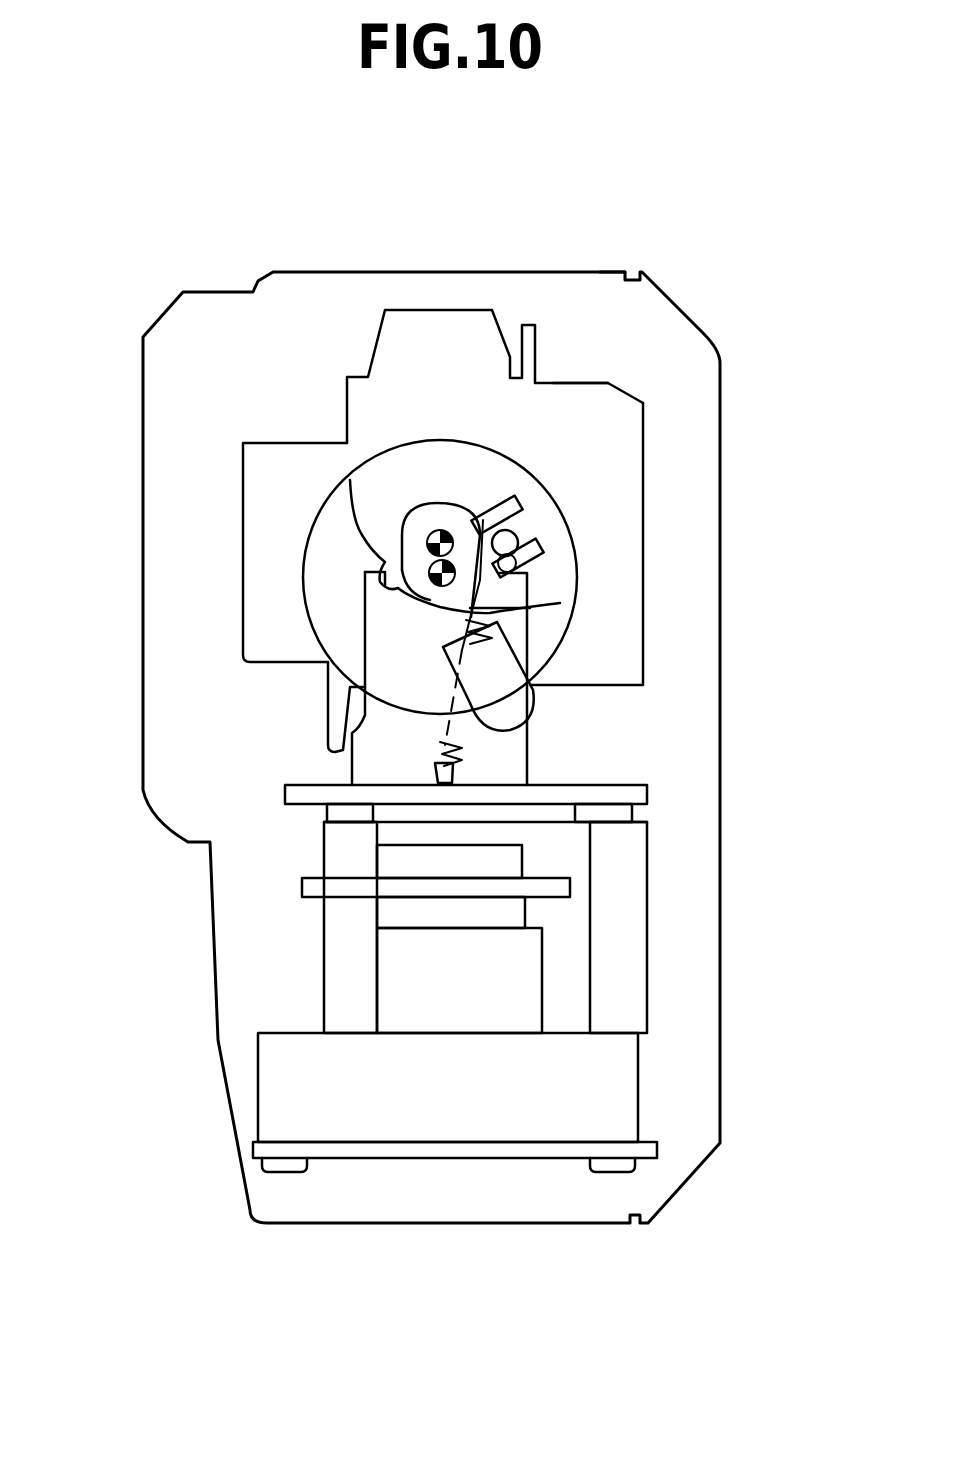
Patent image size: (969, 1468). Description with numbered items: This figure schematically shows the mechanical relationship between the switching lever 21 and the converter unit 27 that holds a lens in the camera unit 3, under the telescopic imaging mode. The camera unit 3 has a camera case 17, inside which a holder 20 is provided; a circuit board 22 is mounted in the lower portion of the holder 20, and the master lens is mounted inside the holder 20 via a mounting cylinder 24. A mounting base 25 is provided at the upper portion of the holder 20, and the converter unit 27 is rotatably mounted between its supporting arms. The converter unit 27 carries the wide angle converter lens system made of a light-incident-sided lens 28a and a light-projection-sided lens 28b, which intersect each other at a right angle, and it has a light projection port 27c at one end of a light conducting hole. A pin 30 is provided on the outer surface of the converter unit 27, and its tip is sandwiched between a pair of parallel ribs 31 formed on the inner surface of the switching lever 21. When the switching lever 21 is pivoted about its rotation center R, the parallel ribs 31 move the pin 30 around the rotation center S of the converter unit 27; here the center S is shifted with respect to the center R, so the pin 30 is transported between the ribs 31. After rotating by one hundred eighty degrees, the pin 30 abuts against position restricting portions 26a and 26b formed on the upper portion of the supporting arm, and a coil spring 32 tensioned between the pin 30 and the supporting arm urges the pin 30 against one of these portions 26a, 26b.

The camera unit 3 is at (341, 266).
The camera case 17 is at (290, 308).
The holder 20 is at (640, 1083).
The switching lever 21 is at (398, 650).
The circuit board 22 is at (473, 1150).
The mounting cylinder 24 is at (517, 977).
The mounting base 25 is at (633, 795).
The position restricting portion 26a is at (370, 560).
The position restricting portion 26b is at (527, 580).
The converter unit 27 is at (584, 370).
The light projection port 27c is at (243, 548).
The light-incident-sided lens 28a is at (648, 478).
The light-projection-sided lens 28b is at (445, 312).
The pin 30 is at (512, 538).
The parallel ribs 31 is at (485, 522).
The coil spring 32 is at (453, 755).
The rotation center of converter unit S is at (437, 535).
The rotation center of switching lever R is at (438, 576).